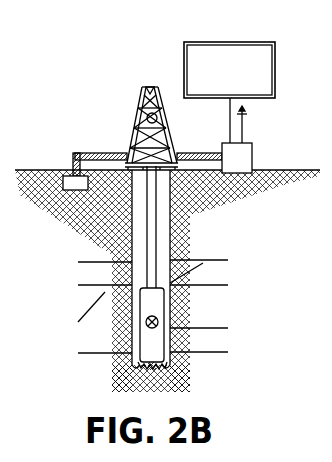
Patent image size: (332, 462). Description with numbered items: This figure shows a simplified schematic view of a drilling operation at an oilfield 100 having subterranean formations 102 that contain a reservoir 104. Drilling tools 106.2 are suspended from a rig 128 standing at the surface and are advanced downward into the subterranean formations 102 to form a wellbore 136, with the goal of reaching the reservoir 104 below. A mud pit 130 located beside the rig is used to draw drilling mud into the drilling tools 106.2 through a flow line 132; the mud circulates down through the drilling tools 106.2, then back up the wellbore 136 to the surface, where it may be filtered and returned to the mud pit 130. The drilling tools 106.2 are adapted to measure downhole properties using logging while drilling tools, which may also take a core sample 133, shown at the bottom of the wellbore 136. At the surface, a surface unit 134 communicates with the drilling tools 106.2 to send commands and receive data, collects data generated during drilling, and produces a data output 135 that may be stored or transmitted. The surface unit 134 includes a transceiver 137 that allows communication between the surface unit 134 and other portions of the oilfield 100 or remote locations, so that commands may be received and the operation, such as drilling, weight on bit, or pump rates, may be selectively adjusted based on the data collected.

The oilfield 100 is at (76, 80).
The subterranean formations 102 is at (240, 250).
The reservoir 104 is at (223, 317).
The drilling tools 106.2 is at (140, 312).
The rig 128 is at (136, 127).
The mud pit 130 is at (73, 192).
The flow line 132 is at (74, 157).
The core sample 133 is at (130, 362).
The surface unit 134 is at (252, 158).
The data output 135 is at (247, 42).
The wellbore 136 is at (172, 210).
The transceiver 137 is at (247, 124).